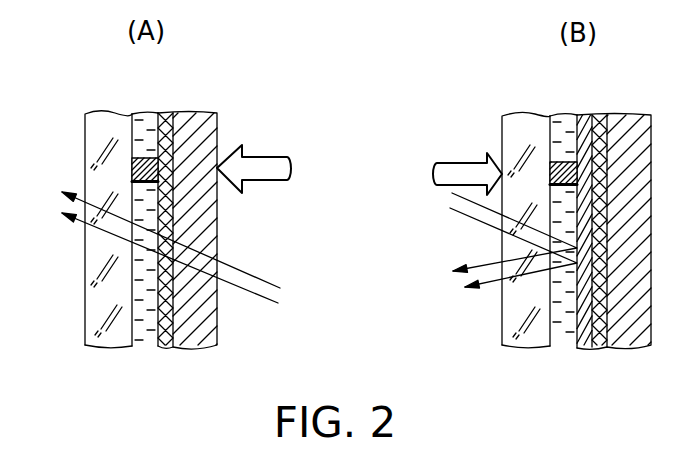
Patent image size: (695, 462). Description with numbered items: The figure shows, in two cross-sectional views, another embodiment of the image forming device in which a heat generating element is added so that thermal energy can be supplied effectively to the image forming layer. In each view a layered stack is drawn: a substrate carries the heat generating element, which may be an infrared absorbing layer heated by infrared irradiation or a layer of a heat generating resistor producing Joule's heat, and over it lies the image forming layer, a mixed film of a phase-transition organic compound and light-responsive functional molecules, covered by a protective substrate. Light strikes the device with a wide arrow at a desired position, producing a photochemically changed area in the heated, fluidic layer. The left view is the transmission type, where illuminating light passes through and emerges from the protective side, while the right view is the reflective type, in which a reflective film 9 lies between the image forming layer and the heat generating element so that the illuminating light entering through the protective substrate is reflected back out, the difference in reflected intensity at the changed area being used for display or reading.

The reflective film 9 is at (589, 348).